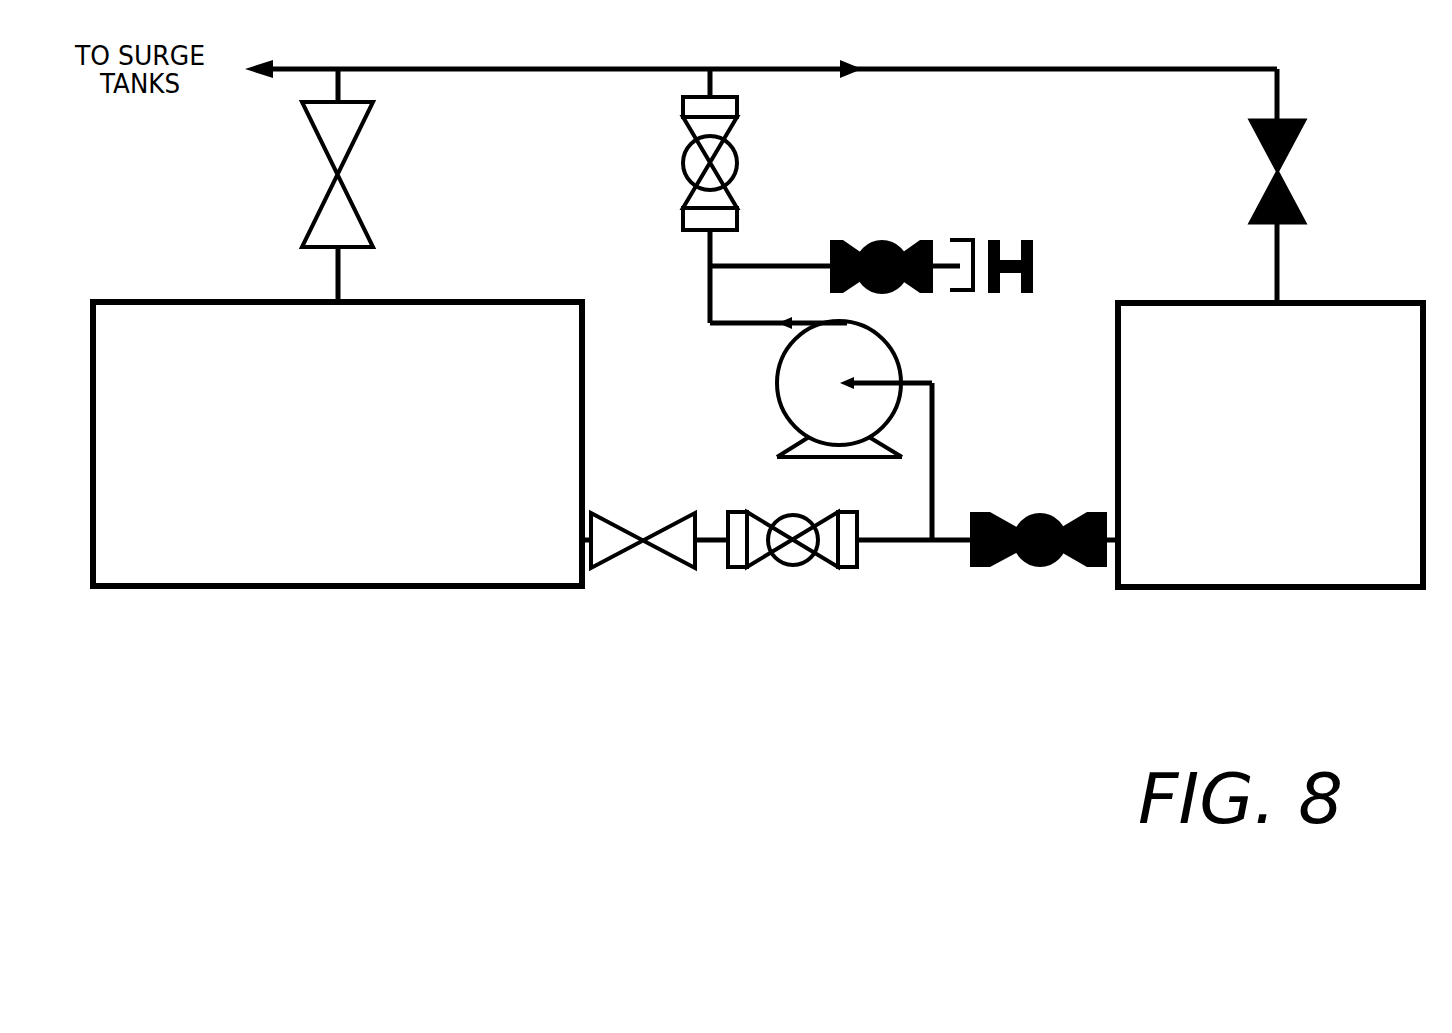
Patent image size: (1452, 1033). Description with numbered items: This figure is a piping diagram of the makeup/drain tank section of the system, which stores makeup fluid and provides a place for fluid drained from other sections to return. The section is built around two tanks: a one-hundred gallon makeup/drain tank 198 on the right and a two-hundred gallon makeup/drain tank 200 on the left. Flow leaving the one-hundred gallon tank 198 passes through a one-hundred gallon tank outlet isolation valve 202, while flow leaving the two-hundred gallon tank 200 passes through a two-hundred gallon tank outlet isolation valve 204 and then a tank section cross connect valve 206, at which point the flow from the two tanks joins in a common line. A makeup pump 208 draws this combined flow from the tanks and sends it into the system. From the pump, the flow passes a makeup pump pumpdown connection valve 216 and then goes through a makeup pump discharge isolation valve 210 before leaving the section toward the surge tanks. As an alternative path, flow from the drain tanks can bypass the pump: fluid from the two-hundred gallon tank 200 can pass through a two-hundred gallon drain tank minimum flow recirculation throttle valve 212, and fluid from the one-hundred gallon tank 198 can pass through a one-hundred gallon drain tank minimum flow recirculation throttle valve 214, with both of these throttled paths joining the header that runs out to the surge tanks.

The 100 gallon makeup/drain tank 198 is at (1285, 590).
The 200 gallon makeup/drain tank 200 is at (323, 607).
The 100 gallon tank outlet isolation valve 202 is at (1042, 570).
The 200 gallon tank outlet isolation valve 204 is at (640, 567).
The tank section cross connect valve 206 is at (795, 572).
The makeup pump 208 is at (770, 392).
The makeup pump discharge isolation valve 210 is at (677, 164).
The 200 gallon drain tank minimum flow recirculation throttle valve 212 is at (358, 175).
The 100 gallon drain tank minimum flow recirculation throttle valve 214 is at (1260, 172).
The makeup pump pumpdown connection valve 216 is at (882, 228).